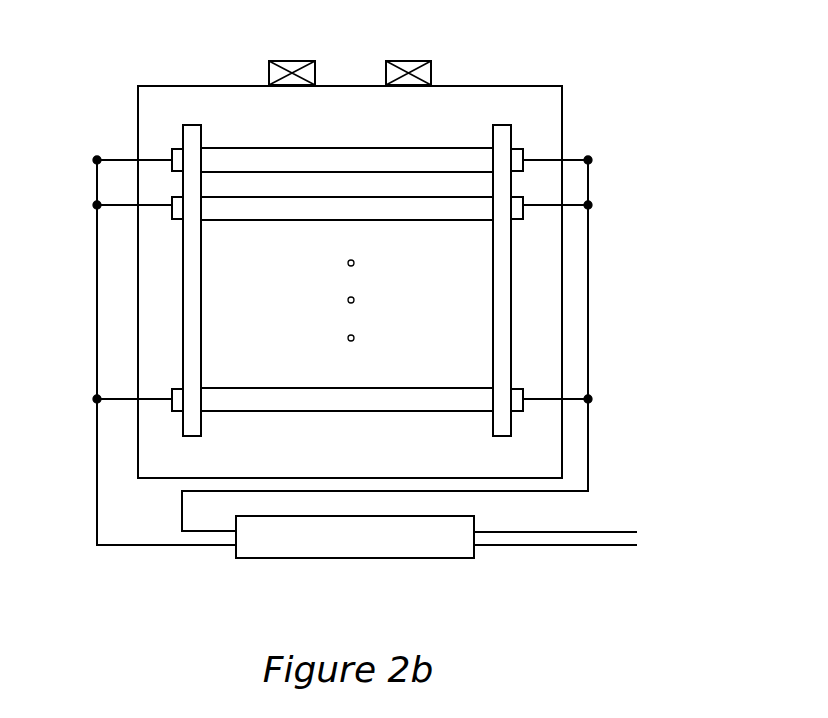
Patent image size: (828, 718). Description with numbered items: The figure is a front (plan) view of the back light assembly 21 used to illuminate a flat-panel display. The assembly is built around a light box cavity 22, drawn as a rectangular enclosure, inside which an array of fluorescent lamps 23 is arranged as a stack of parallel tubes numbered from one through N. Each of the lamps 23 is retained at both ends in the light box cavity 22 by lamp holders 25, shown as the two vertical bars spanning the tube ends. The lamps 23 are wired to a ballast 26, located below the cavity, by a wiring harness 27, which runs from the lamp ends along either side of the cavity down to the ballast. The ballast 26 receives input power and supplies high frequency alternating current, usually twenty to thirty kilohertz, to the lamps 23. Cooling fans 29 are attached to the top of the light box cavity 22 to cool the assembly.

The back light assembly 21 is at (352, 65).
The light box cavity 22 is at (562, 133).
The fluorescent lamps 23 is at (251, 197).
The lamp holders 25 is at (183, 318).
The ballast 26 is at (479, 557).
The wiring harness 27 is at (97, 373).
The cooling fans 29 is at (403, 61).